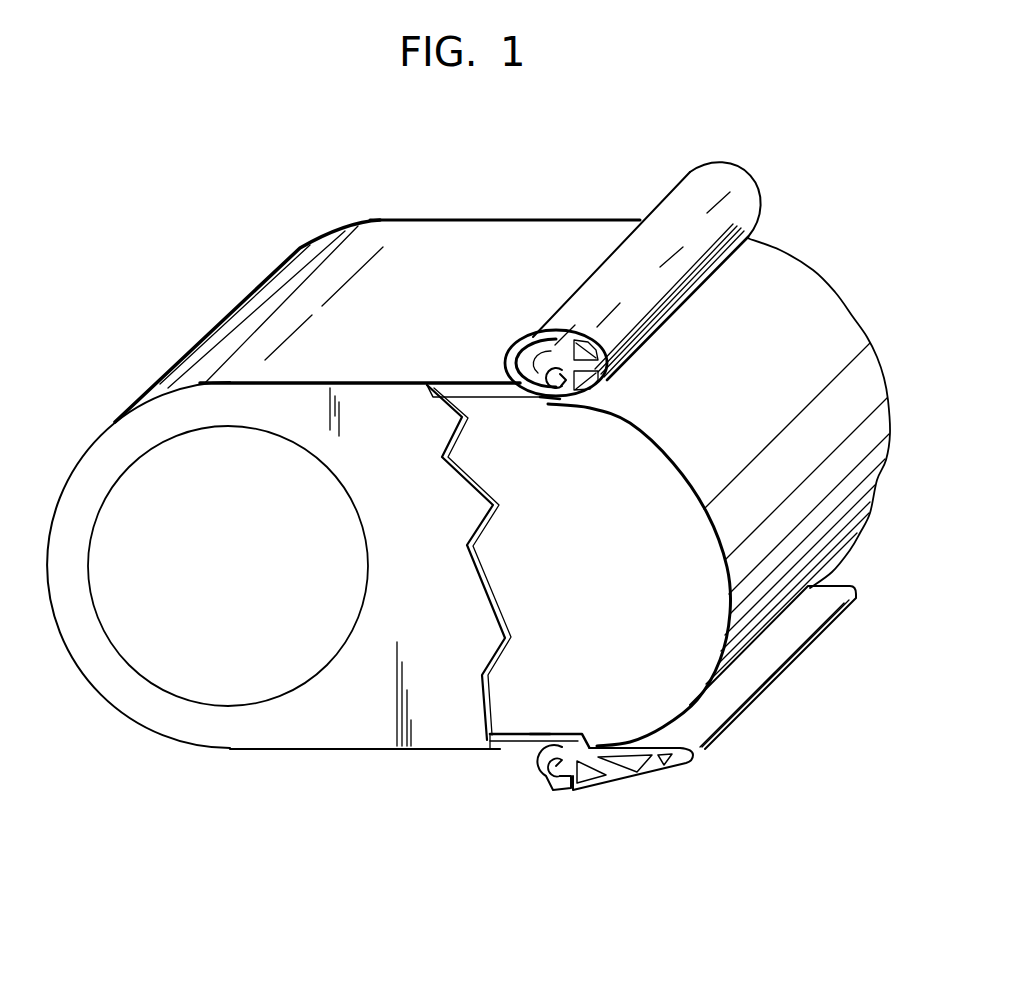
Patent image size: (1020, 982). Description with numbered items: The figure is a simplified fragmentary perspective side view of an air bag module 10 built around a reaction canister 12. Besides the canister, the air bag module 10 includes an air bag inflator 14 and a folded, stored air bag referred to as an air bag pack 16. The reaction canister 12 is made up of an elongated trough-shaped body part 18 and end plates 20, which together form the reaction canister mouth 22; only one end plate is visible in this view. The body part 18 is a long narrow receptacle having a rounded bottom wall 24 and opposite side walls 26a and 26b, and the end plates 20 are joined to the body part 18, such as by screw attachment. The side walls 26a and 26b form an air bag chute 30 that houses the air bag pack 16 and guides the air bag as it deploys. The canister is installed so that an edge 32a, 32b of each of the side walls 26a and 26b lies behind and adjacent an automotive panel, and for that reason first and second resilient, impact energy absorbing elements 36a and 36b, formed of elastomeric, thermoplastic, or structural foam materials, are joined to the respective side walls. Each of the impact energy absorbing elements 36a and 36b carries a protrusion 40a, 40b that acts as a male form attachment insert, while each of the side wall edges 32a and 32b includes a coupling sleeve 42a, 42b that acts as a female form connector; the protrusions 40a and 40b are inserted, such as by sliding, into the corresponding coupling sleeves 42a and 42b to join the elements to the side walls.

The air bag module 10 is at (172, 221).
The reaction canister 12 is at (418, 208).
The air bag inflator 14 is at (243, 587).
The air bag pack 16 is at (848, 315).
The body part 18 is at (513, 233).
The end plates 20 is at (333, 700).
The reaction canister mouth 22 is at (587, 748).
The rounded bottom wall 24 is at (162, 387).
The side wall 26a is at (508, 747).
The side wall 26b is at (450, 388).
The air bag chute 30 is at (482, 745).
The edge 32a is at (545, 743).
The edge 32b is at (558, 394).
The first resilient impact energy absorbing element 36a is at (780, 643).
The second resilient impact energy absorbing element 36b is at (665, 222).
The protrusion 40a is at (531, 776).
The protrusion 40b is at (546, 350).
The coupling sleeve 42a is at (552, 791).
The coupling sleeve 42b is at (541, 392).